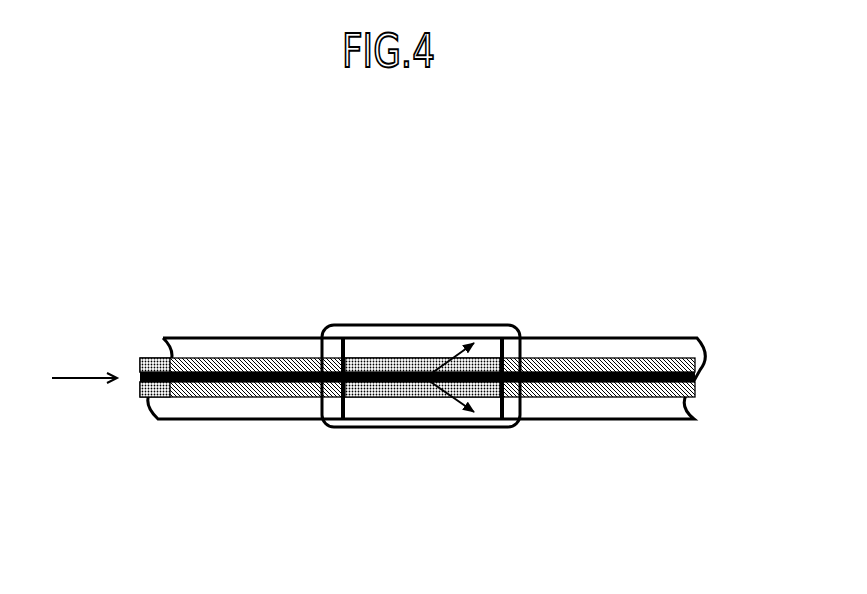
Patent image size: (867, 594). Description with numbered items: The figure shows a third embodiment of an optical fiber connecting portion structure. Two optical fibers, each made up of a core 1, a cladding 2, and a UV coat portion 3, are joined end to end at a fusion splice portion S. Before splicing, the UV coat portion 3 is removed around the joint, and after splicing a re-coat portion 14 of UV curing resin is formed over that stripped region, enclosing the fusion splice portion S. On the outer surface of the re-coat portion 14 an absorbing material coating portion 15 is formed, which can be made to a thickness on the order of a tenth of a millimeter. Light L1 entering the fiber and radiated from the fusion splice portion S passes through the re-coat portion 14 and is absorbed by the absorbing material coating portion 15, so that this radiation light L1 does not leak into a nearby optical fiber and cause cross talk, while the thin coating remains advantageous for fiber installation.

The core 1 is at (142, 380).
The cladding 2 is at (152, 358).
The UV coat portion 3 is at (238, 347).
The re-coat portion 14 is at (360, 336).
The absorbing material coating portion 15 is at (352, 429).
The fusion splice portion S is at (425, 376).
The radiated light L1 is at (497, 288).